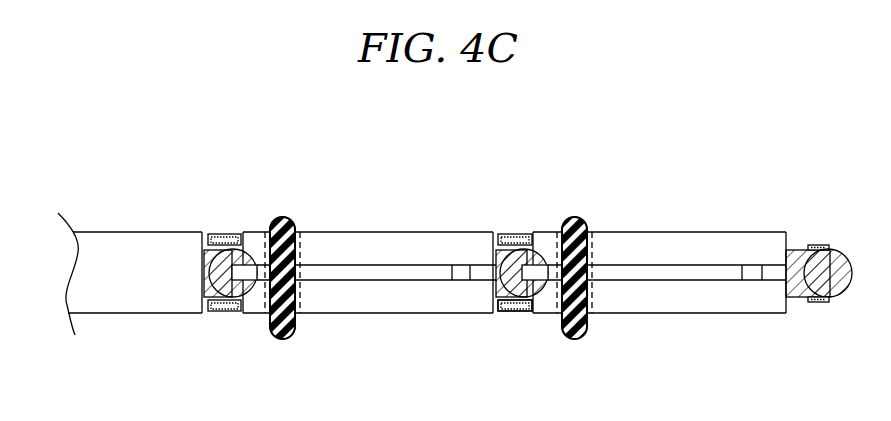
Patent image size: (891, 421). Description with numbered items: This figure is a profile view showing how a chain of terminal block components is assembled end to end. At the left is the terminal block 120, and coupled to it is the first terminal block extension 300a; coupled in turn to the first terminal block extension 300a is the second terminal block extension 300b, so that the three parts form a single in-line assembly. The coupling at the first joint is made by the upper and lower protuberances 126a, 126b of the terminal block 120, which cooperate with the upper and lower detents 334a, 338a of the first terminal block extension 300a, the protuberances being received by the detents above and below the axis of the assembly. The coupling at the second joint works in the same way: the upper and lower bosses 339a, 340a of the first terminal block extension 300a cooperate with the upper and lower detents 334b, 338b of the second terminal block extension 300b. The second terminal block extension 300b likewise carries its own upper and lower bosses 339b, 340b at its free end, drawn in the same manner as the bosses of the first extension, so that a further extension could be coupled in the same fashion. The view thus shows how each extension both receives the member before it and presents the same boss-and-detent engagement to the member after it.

The terminal block 120 is at (110, 190).
The upper protuberance 126a is at (204, 246).
The lower protuberance 126b is at (204, 300).
The first terminal block extension 300a is at (383, 190).
The second terminal block extension 300b is at (673, 190).
The upper detent 334a is at (231, 232).
The upper detent 334b is at (517, 232).
The lower detent 338a is at (222, 315).
The lower detent 338b is at (513, 315).
The upper boss 339a is at (496, 240).
The upper boss 339b is at (818, 245).
The lower boss 340a is at (496, 298).
The lower boss 340b is at (820, 303).